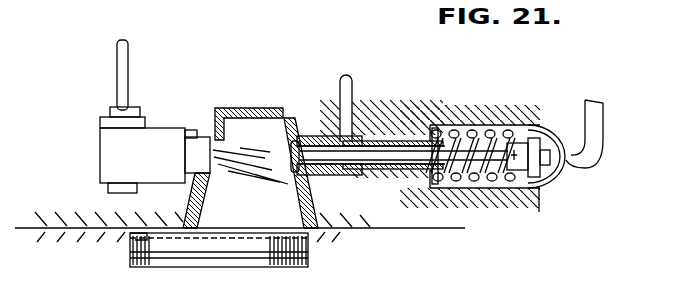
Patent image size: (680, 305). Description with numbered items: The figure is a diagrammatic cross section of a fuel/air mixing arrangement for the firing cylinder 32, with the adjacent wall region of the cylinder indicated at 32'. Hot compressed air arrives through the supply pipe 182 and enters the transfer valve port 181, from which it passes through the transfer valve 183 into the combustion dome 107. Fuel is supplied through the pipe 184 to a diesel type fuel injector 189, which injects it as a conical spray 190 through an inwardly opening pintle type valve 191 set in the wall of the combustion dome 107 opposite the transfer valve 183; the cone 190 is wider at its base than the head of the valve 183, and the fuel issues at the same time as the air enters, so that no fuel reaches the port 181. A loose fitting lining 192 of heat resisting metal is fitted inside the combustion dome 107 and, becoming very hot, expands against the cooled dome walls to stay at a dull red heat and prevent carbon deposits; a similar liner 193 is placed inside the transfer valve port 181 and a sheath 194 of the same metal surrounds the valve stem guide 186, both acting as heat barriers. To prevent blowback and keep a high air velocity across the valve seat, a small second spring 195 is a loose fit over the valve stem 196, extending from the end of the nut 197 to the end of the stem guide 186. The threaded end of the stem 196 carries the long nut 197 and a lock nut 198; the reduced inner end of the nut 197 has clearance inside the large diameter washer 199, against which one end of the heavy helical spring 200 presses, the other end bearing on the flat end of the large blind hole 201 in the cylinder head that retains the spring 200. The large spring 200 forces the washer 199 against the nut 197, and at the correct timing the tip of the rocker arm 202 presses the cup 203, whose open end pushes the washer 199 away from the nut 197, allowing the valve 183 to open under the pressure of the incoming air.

The wall 32' is at (66, 12).
The firing cylinder 32 is at (240, 138).
The combustion dome 107 is at (217, 108).
The transfer valve port 181 is at (326, 250).
The supply pipe 182 is at (347, 78).
The transfer valve 183 is at (280, 118).
The fuel pipe 184 is at (118, 60).
The valve stem guide 186 is at (397, 168).
The diesel type fuel injector 189 is at (117, 146).
The conical spray 190 is at (240, 140).
The pintle type valve 191 is at (197, 137).
The lining 192 is at (178, 202).
The liner 193 is at (313, 141).
The sheath 194 is at (362, 140).
The small second spring 195 is at (471, 136).
The valve stem 196 is at (458, 136).
The nut 197 is at (515, 140).
The lock nut 198 is at (543, 135).
The washer 199 is at (538, 212).
The heavy helical spring 200 is at (437, 190).
The blind hole 201 is at (483, 184).
The rocker arm 202 is at (597, 112).
The cup 203 is at (548, 184).